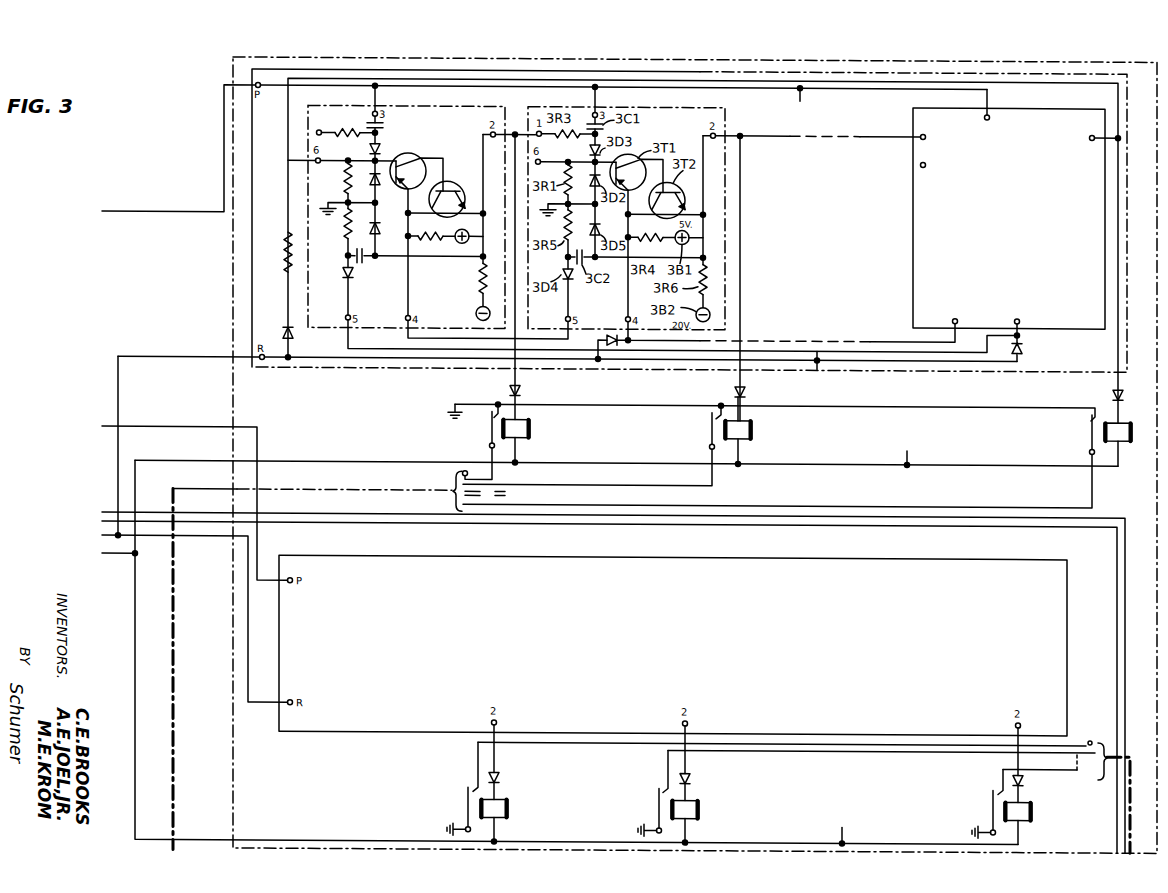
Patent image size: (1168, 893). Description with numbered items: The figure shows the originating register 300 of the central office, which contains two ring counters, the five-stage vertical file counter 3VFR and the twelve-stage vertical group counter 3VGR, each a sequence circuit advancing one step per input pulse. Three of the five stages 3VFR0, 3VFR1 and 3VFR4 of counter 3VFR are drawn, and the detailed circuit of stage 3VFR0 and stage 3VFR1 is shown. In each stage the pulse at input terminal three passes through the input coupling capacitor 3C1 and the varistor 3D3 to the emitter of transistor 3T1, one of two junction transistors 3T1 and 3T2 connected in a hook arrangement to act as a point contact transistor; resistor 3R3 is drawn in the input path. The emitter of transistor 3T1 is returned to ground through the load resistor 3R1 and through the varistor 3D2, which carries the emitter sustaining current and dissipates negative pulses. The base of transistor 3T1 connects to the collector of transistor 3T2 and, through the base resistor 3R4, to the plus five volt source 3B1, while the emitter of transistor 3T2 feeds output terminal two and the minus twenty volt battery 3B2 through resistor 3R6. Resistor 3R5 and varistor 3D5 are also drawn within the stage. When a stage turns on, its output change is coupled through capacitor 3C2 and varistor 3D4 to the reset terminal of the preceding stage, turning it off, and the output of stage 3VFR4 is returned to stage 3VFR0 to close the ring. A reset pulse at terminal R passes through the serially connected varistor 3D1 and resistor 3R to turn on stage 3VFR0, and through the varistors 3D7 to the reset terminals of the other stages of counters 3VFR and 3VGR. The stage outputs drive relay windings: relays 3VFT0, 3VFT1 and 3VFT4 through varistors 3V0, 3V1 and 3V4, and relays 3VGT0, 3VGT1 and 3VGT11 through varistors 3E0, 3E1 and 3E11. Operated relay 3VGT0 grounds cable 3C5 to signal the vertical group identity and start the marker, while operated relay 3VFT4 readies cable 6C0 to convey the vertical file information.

The originating register 300 is at (234, 73).
The vertical file ring counter 3VFR is at (251, 238).
The vertical group ring counter 3VGR is at (673, 645).
The first counter stage 3VFR0 is at (481, 105).
The second counter stage 3VFR1 is at (700, 105).
The fifth counter stage 3VFR4 is at (1062, 103).
The resistor 3R is at (284, 250).
The varistor 3D1 is at (282, 332).
The resistor 3R3 is at (345, 122).
The input coupling capacitor 3C1 is at (383, 123).
The varistor 3D3 is at (380, 151).
The junction transistor 3T1 is at (418, 156).
The junction transistor 3T2 is at (453, 181).
The load resistor 3R1 is at (344, 182).
The varistor 3D2 is at (381, 184).
The resistor 3R5 is at (344, 239).
The varistor 3D5 is at (381, 233).
The capacitor 3C2 is at (362, 263).
The varistor 3D4 is at (341, 273).
The base resistor 3R4 is at (431, 254).
The +5 volt direct-current potential source 3B1 is at (462, 242).
The resistor 3R6 is at (478, 284).
The −20 volt battery 3B2 is at (476, 309).
The varistor 3D7 is at (608, 333).
The varistor 3V0 is at (522, 391).
The varistor 3V1 is at (741, 391).
The varistor 3V4 is at (1110, 391).
The vertical file relay 3VFT0 is at (531, 427).
The vertical file relay 3VFT1 is at (754, 427).
The vertical file relay 3VFT4 is at (1103, 427).
The varistor 3E0 is at (502, 776).
The varistor 3E1 is at (690, 776).
The varistor 3E11 is at (1023, 776).
The vertical group relay 3VGT0 is at (511, 805).
The vertical group relay 3VGT1 is at (701, 805).
The vertical group relay 3VGT11 is at (1033, 806).
The cable 6C0 is at (173, 786).
The cable 3C5 is at (1129, 822).